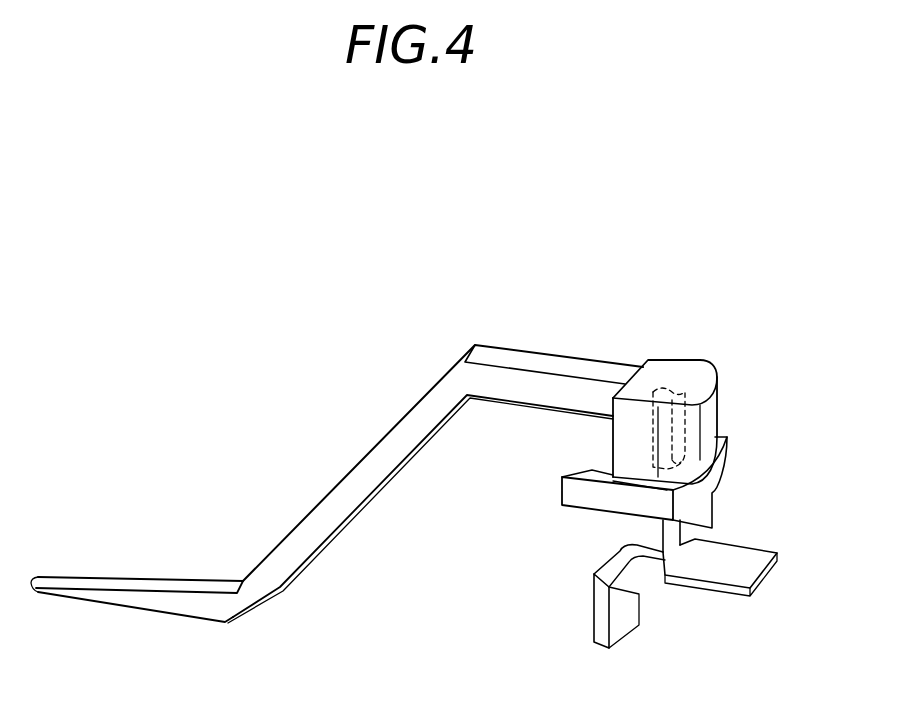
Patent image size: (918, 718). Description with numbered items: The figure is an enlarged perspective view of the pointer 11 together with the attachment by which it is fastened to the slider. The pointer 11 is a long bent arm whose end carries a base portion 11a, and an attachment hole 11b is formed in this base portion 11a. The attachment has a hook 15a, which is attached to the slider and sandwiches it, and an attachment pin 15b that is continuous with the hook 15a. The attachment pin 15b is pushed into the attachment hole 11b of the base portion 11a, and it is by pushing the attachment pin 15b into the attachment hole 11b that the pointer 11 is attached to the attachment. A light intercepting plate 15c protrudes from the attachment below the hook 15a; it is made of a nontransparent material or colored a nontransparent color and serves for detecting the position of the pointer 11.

The pointer 11 is at (353, 485).
The base portion 11a is at (703, 418).
The attachment hole 11b is at (660, 392).
The hook 15a is at (575, 490).
The attachment pin 15b is at (672, 397).
The light intercepting plate 15c is at (738, 573).